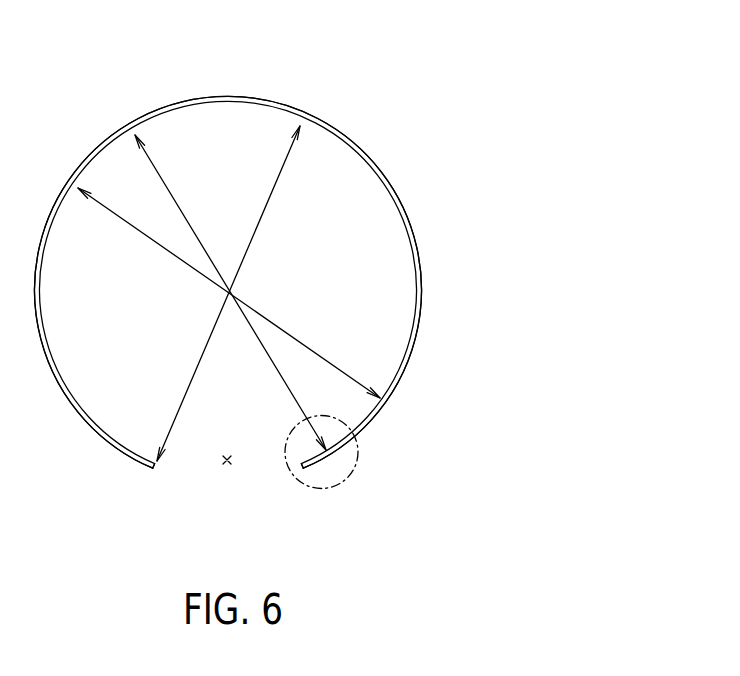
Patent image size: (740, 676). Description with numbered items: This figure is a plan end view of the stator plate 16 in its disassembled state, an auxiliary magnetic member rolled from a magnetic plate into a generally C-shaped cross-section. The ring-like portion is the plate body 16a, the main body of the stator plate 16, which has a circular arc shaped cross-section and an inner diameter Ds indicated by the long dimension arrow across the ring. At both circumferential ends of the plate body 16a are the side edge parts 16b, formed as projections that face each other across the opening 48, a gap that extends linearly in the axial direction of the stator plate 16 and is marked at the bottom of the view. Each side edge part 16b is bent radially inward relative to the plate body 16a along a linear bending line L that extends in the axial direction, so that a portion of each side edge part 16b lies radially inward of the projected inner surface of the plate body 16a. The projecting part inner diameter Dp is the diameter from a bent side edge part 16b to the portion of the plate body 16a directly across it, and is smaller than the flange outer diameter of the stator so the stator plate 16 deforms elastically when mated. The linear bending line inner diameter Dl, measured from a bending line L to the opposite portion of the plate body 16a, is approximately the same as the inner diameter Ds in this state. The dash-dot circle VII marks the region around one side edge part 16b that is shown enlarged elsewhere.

The stator plate 16 is at (392, 180).
The plate body 16a is at (147, 118).
The side edge parts 16b is at (142, 462).
The opening 48 is at (225, 470).
The inner diameter Ds is at (229, 293).
The projecting part inner diameter Dp is at (228, 293).
The linear bending line inner diameter Dl is at (230, 292).
The linear bending line L is at (127, 458).
The section VII is at (358, 462).